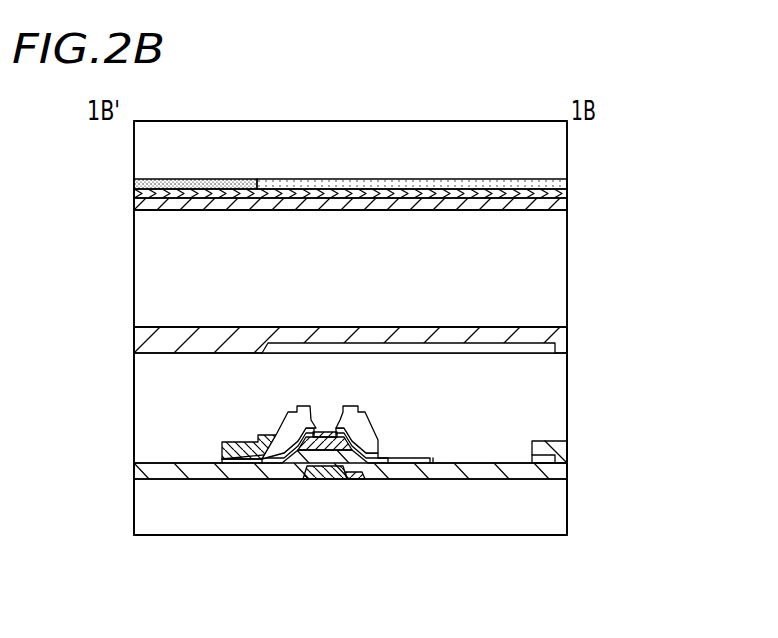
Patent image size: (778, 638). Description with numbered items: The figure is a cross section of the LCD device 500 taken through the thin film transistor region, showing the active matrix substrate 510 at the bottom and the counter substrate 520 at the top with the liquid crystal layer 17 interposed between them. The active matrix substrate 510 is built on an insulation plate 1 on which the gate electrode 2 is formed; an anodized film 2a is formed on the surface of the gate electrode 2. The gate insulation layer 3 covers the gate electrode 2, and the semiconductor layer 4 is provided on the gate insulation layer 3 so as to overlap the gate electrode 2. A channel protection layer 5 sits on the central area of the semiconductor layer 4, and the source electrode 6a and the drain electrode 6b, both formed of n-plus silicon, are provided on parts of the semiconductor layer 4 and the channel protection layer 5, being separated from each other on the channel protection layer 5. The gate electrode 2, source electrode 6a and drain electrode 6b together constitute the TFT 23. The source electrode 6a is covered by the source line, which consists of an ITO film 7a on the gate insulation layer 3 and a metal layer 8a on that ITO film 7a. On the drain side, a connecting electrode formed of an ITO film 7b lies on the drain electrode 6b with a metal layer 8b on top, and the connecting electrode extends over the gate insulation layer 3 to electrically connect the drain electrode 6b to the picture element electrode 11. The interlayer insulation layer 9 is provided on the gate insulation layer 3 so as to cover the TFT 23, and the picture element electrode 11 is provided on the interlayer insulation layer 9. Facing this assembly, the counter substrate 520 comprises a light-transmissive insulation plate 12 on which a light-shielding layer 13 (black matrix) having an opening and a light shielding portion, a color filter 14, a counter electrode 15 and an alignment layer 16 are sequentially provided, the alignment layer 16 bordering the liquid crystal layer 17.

The LCD device 500 is at (578, 54).
The counter substrate 520 is at (663, 121).
The active matrix substrate 510 is at (641, 540).
The light-transmissive insulation plate 12 is at (467, 142).
The light-shielding layer 13 is at (203, 178).
The color filter 14 is at (320, 183).
The counter electrode 15 is at (567, 192).
The alignment layer 16 is at (567, 205).
The liquid crystal layer 17 is at (155, 239).
The picture element electrode 11 is at (545, 350).
The interlayer insulation layer 9 is at (547, 399).
The insulation plate 1 is at (557, 517).
The gate insulation layer 3 is at (140, 472).
The gate electrode 2 is at (335, 470).
The anodized film 2a is at (353, 476).
The semiconductor layer 4 is at (316, 445).
The channel protection layer 5 is at (325, 432).
The source electrode 6a is at (287, 458).
The drain electrode 6b is at (365, 457).
The ITO film 7a is at (272, 462).
The ITO film 7b is at (395, 462).
The metal layer 8a is at (292, 418).
The metal layer 8b is at (375, 418).
The TFT 23 is at (255, 430).